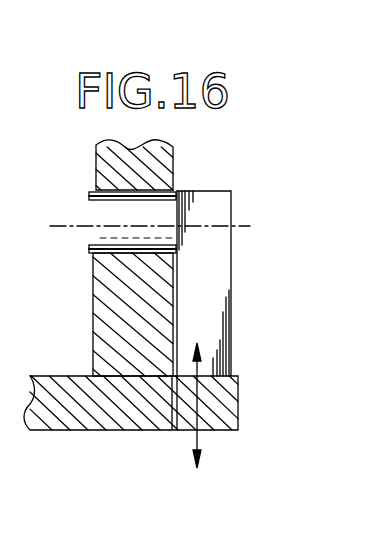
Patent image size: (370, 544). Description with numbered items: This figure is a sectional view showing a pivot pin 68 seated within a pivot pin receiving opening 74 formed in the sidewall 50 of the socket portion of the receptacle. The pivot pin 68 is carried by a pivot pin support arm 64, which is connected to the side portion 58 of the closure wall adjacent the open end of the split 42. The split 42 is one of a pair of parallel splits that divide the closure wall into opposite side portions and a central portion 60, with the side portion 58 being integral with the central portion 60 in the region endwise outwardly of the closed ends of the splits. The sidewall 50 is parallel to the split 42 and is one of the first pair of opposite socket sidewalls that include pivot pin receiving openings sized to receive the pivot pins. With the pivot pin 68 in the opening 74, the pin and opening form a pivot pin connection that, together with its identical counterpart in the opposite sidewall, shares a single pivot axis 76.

The pivot pin 68 is at (101, 220).
The pivot axis 76 is at (66, 225).
The pivot pin receiving opening 74 is at (106, 251).
The socket sidewall 50 is at (105, 314).
The pivot pin support arm 64 is at (222, 262).
The central portion 60 is at (60, 408).
The split 42 is at (167, 405).
The side portion 58 is at (223, 417).